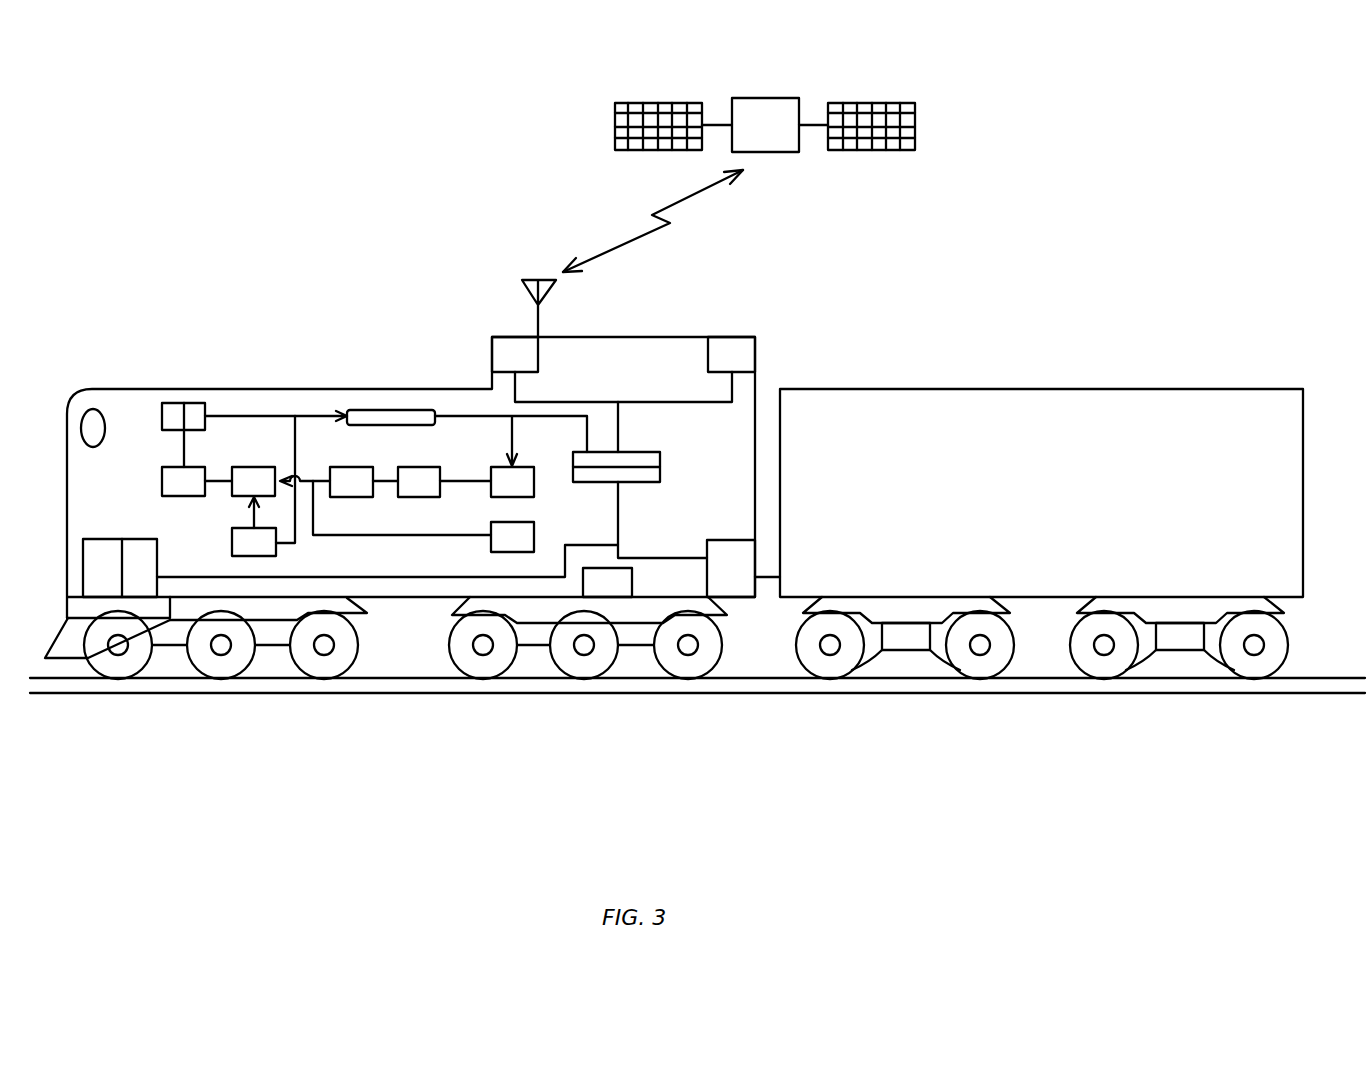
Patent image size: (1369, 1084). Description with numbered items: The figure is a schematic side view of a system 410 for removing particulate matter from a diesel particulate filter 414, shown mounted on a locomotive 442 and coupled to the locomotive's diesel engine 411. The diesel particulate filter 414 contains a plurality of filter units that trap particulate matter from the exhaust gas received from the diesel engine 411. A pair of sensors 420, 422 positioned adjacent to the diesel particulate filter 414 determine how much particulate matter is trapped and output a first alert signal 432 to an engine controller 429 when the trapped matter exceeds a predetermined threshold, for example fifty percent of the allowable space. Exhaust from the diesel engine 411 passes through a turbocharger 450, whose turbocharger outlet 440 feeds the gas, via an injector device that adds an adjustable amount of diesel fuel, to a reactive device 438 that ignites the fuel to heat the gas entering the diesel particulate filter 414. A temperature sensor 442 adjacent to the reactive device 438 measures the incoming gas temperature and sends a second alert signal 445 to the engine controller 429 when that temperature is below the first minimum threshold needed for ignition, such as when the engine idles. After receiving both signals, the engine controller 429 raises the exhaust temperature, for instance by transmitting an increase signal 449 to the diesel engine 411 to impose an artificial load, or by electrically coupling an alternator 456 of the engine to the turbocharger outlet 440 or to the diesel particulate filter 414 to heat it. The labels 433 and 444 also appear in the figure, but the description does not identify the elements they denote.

The system 410 is at (848, 307).
The diesel engine 411 is at (534, 498).
The diesel particulate filter 414 is at (162, 481).
The sensor 420 is at (160, 416).
The sensor 422 is at (193, 402).
The engine controller 429 is at (391, 410).
The first alert signal 432 is at (305, 414).
The inverter 433 is at (340, 467).
The reactive device 438 is at (232, 498).
The turbocharger outlet 440 is at (478, 483).
The temperature sensor 442 is at (241, 389).
The communication unit 444 is at (660, 460).
The second alert signal 445 is at (294, 451).
The increase signal 449 is at (497, 420).
The turbocharger 450 is at (412, 498).
The alternator 456 is at (491, 548).